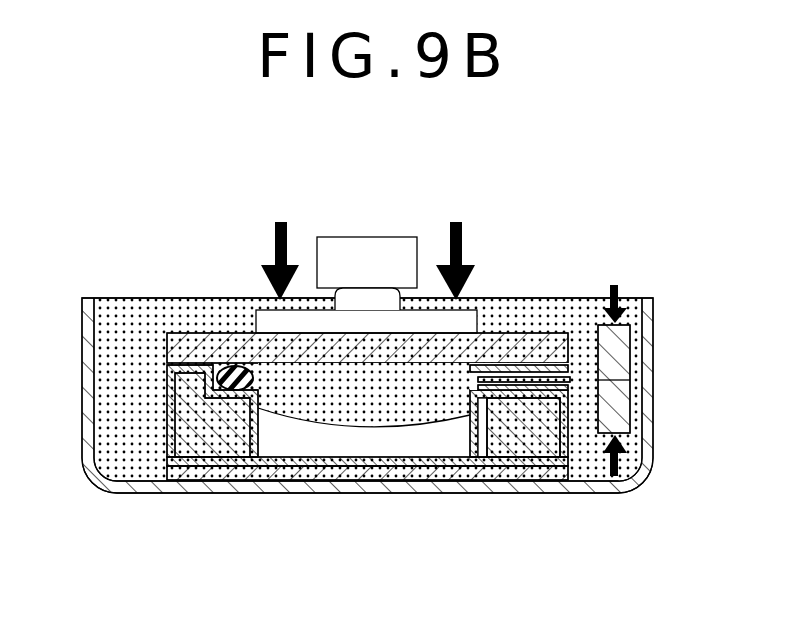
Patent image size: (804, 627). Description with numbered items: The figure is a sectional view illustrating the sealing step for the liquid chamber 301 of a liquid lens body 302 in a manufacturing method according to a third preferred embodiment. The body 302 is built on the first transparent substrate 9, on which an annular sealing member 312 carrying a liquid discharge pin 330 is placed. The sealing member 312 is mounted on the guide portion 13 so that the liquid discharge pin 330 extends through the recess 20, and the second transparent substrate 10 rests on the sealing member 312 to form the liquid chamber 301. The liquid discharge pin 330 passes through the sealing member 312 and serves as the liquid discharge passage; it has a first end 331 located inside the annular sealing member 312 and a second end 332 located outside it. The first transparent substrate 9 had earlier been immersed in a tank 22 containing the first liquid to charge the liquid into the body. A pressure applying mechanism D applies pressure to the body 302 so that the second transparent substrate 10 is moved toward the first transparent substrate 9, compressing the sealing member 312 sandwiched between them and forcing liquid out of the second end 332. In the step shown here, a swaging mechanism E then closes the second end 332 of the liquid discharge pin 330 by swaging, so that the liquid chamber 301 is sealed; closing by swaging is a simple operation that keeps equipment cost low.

The first transparent substrate 9 is at (441, 499).
The second transparent substrate 10 is at (538, 350).
The guide portion 13 is at (188, 390).
The recess 20 is at (580, 378).
The tank 22 is at (653, 312).
The liquid chamber 301 is at (345, 440).
The body 302 is at (281, 523).
The annular sealing member 312 is at (238, 368).
The liquid discharge pin 330 is at (603, 381).
The first end 331 is at (463, 365).
The second end 332 is at (632, 380).
The pressure applying mechanism D is at (367, 237).
The swaging mechanism E is at (623, 425).